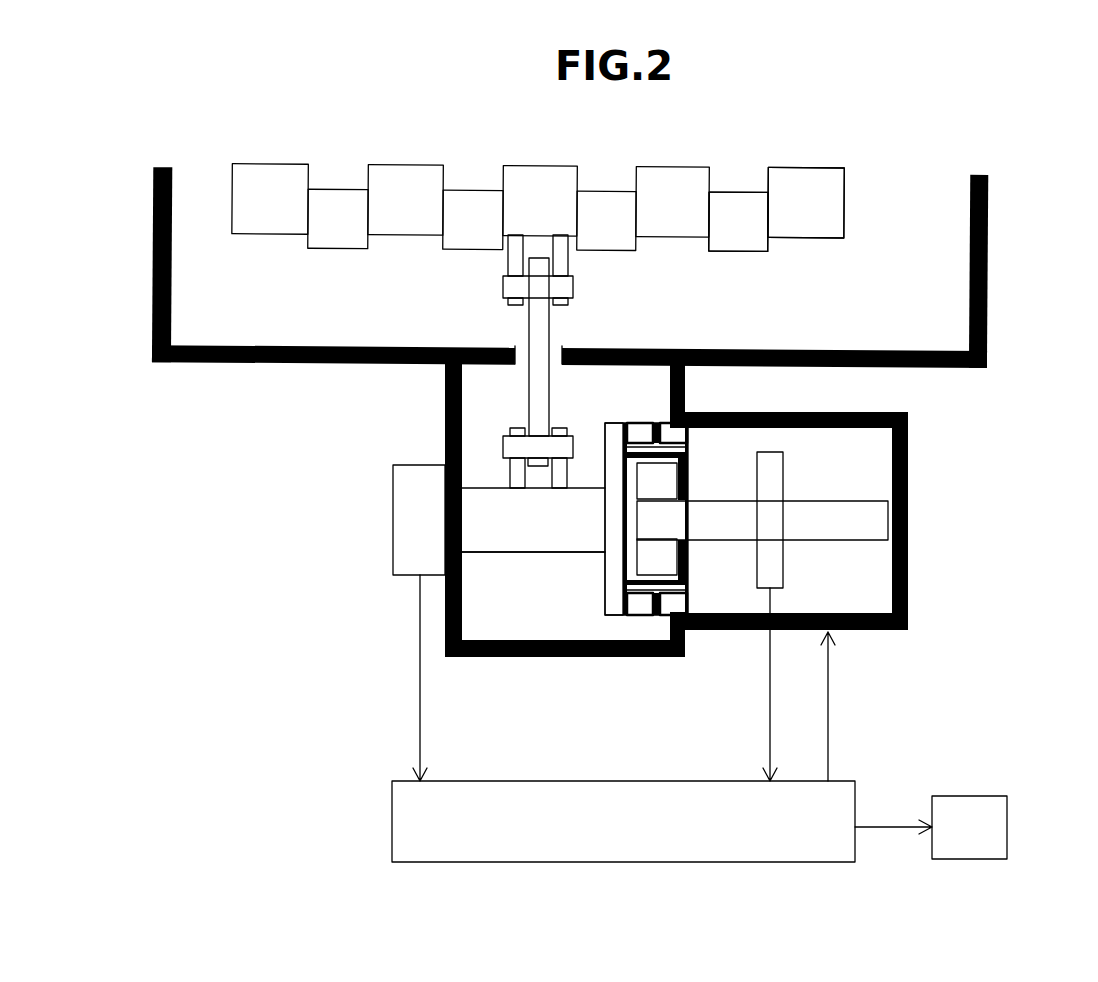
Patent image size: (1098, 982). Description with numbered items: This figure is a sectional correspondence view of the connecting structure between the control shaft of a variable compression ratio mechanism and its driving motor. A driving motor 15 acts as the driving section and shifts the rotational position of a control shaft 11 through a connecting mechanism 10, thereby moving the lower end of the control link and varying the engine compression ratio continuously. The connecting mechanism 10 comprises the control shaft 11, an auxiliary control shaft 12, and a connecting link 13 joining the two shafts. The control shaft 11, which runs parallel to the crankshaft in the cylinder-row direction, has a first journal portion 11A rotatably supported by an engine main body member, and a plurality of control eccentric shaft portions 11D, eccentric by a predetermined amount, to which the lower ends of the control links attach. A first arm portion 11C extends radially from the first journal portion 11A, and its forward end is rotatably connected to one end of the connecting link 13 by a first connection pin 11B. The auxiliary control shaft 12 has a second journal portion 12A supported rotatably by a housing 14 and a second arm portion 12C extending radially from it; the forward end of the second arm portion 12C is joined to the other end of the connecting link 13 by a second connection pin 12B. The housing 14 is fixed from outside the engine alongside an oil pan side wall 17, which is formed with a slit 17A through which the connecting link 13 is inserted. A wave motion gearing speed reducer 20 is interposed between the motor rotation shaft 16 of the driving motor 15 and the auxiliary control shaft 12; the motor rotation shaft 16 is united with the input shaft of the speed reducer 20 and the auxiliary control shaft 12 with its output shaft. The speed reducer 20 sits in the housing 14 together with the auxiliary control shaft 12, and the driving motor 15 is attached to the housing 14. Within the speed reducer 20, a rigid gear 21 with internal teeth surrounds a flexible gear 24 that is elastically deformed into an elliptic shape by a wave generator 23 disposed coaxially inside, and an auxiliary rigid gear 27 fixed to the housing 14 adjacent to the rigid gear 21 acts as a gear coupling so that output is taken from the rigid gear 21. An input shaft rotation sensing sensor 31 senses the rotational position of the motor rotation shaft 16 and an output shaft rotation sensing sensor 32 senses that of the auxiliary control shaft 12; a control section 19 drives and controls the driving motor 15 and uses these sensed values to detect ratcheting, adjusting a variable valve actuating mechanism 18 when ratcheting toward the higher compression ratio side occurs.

The connecting mechanism 10 is at (363, 602).
The control shaft 11 is at (845, 158).
The first journal portion 11A is at (843, 206).
The first connection pin 11B is at (565, 287).
The first arm portion 11C is at (517, 260).
The control eccentric shaft portion 11D is at (738, 245).
The auxiliary control shaft 12 is at (557, 572).
The second journal portion 12A is at (497, 545).
The second connection pin 12B is at (514, 447).
The second arm portion 12C is at (516, 472).
The connecting link 13 is at (533, 393).
The housing 14 is at (443, 378).
The driving motor 15 is at (908, 591).
The motor rotation shaft 16 is at (863, 524).
The oil pan side wall 17 is at (987, 258).
The slit 17A is at (552, 350).
The variable valve actuating mechanism 18 is at (1000, 827).
The control section 19 is at (855, 860).
The speed reducer 20 is at (611, 636).
The rigid gear 21 is at (640, 603).
The wave generator 23 is at (665, 487).
The flexible gear 24 is at (640, 455).
The auxiliary rigid gear 27 is at (687, 628).
The input shaft rotation sensing sensor 31 is at (783, 575).
The output shaft rotation sensing sensor 32 is at (402, 481).